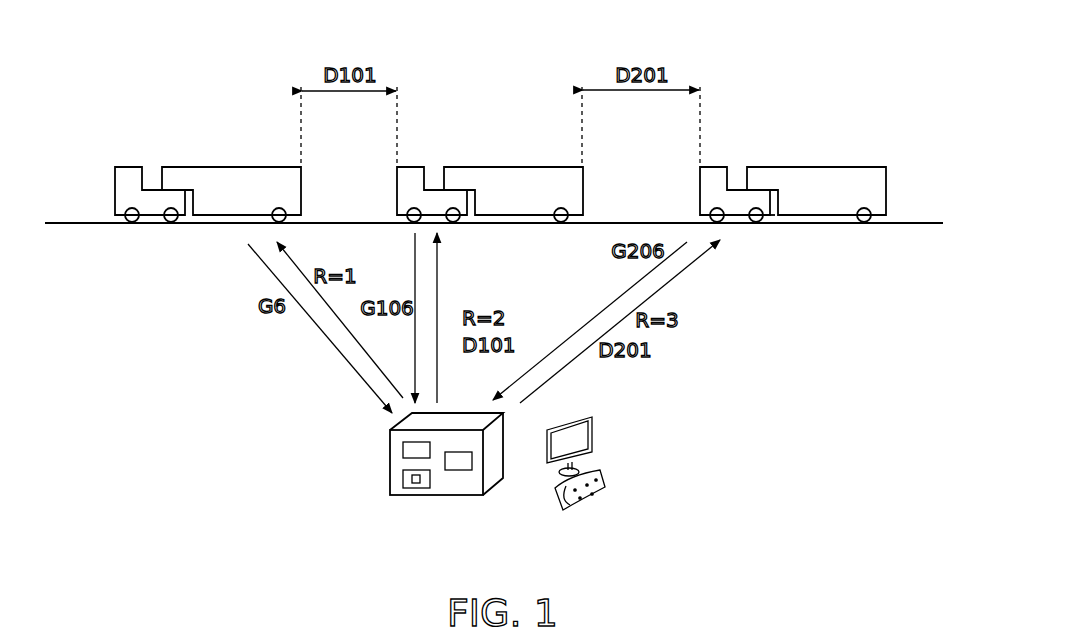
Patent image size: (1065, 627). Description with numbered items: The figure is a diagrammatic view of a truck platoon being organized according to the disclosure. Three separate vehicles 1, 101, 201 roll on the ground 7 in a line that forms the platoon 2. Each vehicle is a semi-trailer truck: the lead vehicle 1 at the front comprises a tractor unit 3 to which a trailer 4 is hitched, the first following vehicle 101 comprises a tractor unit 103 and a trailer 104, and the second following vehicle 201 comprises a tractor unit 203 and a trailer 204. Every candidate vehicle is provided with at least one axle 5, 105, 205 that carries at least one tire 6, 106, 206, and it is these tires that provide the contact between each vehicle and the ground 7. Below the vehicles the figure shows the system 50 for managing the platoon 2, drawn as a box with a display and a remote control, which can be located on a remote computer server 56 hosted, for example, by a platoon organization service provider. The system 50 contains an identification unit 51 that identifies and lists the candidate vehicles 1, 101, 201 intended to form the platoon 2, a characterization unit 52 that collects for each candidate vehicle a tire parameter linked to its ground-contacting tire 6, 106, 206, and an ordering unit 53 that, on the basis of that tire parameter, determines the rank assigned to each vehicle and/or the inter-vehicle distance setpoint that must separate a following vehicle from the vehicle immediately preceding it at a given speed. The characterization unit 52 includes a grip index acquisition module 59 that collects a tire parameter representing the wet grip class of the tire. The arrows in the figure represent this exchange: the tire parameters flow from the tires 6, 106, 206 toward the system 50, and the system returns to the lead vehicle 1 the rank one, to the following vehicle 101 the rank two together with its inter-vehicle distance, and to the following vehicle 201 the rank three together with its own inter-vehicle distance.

The lead vehicle 1 is at (197, 163).
The platoon 2 is at (793, 151).
The tractor unit 3 is at (127, 175).
The trailer 4 is at (185, 180).
The axle 5 is at (132, 222).
The tire 6 is at (115, 225).
The ground 7 is at (77, 225).
The system for managing a platoon 50 is at (524, 496).
The identification unit 51 is at (403, 450).
The characterization unit 52 is at (403, 478).
The ordering unit 53 is at (460, 470).
The remote server 56 is at (454, 496).
The grip index acquisition module 59 is at (416, 487).
The following vehicle 101 is at (498, 168).
The tractor unit 103 is at (410, 177).
The trailer 104 is at (472, 178).
The axle 105 is at (562, 222).
The tire 106 is at (552, 225).
The following vehicle 201 is at (714, 155).
The tractor unit 203 is at (714, 178).
The trailer 204 is at (776, 178).
The axle 205 is at (755, 222).
The tire 206 is at (772, 225).